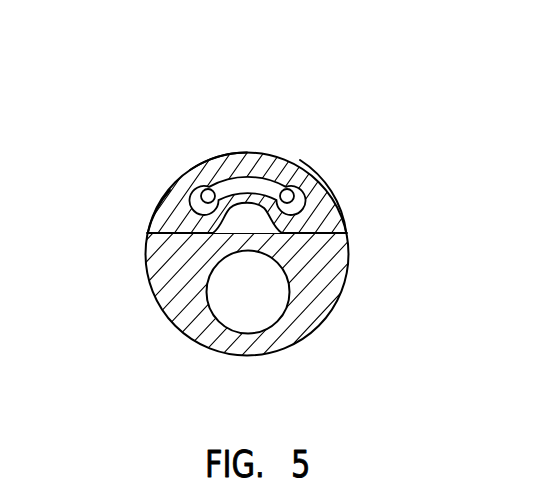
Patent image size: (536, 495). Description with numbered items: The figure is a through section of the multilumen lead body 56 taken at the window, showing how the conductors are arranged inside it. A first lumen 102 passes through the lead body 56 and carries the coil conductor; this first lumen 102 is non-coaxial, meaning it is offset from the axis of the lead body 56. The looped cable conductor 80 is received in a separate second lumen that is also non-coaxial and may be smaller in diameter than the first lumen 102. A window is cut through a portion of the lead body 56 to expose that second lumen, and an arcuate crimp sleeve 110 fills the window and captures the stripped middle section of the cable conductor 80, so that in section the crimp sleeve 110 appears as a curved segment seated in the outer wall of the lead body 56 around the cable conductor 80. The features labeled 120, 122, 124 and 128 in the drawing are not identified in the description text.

The lead body 56 is at (328, 318).
The cable conductor 80 is at (209, 190).
The first lumen 102 is at (260, 323).
The arcuate crimp sleeve 110 is at (338, 203).
The upper body portion 120 is at (190, 174).
The planar interface 122 is at (347, 233).
The side wall portion 124 is at (157, 207).
The key projection 128 is at (230, 222).